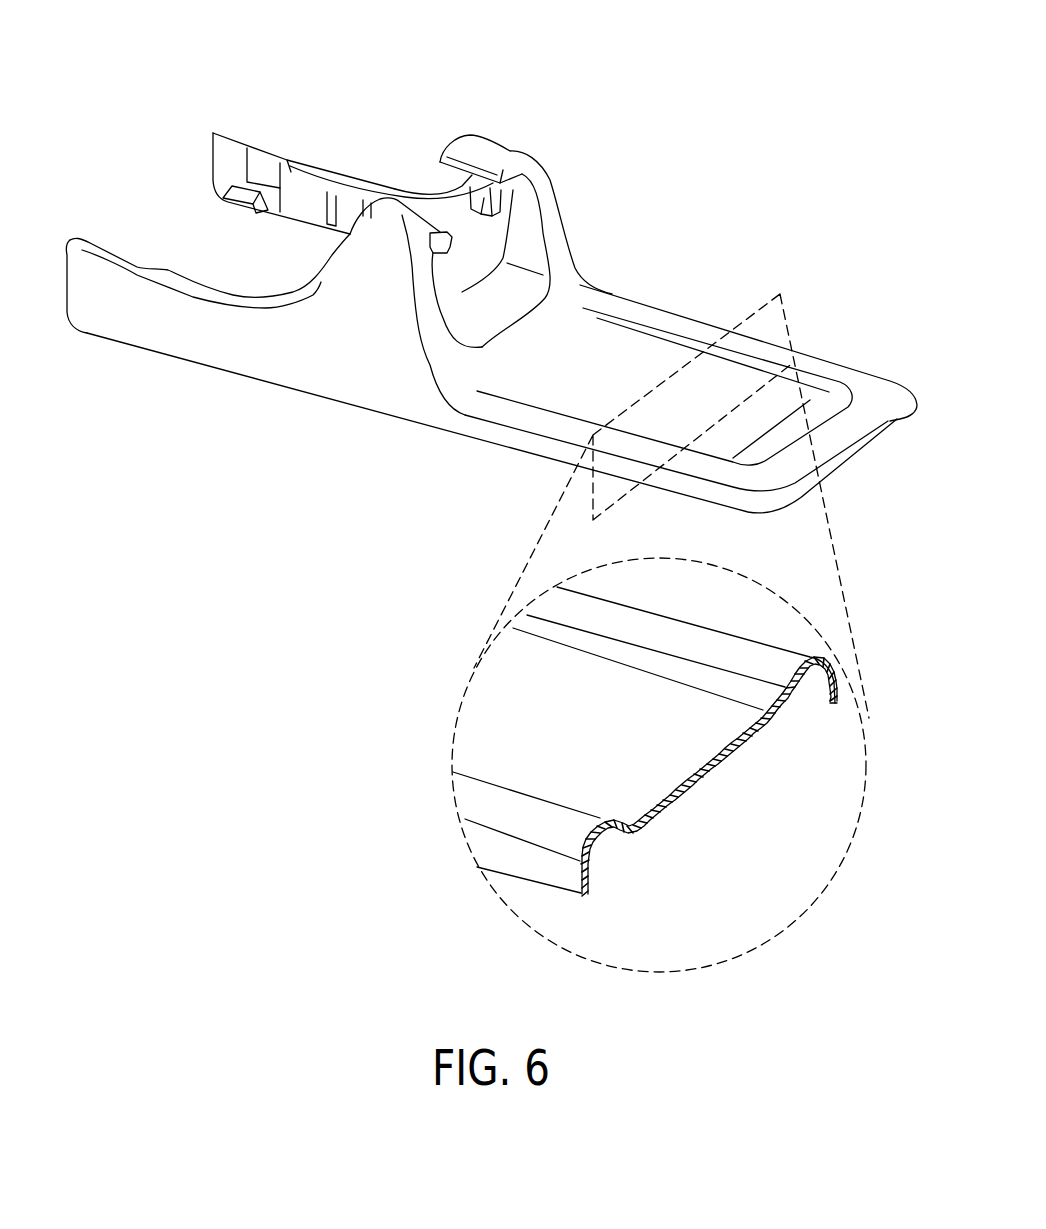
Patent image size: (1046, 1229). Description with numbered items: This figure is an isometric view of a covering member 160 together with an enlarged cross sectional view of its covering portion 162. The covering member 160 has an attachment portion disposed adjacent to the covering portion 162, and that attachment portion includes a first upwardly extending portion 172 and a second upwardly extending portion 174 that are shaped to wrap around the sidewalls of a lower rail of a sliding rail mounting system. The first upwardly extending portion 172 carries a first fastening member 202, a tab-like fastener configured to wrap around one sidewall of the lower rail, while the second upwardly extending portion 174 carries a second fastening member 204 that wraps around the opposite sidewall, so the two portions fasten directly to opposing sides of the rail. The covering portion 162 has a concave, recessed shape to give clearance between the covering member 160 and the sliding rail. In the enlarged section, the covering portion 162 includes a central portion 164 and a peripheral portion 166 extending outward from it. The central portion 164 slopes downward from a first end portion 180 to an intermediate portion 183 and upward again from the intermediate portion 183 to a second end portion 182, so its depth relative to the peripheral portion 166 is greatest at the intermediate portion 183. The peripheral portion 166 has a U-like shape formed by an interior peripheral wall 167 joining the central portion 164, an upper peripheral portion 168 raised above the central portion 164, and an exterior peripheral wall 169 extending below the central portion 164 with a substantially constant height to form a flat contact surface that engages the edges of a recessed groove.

The covering member 160 is at (433, 91).
The covering portion 162 is at (887, 386).
The central portion 164 is at (641, 781).
The peripheral portion 166 is at (811, 652).
The interior peripheral wall 167 is at (775, 700).
The upper peripheral portion 168 is at (797, 653).
The exterior peripheral wall 169 is at (831, 705).
The first upwardly extending portion 172 is at (500, 165).
The second upwardly extending portion 174 is at (372, 267).
The first end portion 180 is at (605, 331).
The second end portion 182 is at (833, 382).
The intermediate portion 183 is at (783, 413).
The first fastening member 202 is at (460, 180).
The second fastening member 204 is at (450, 250).